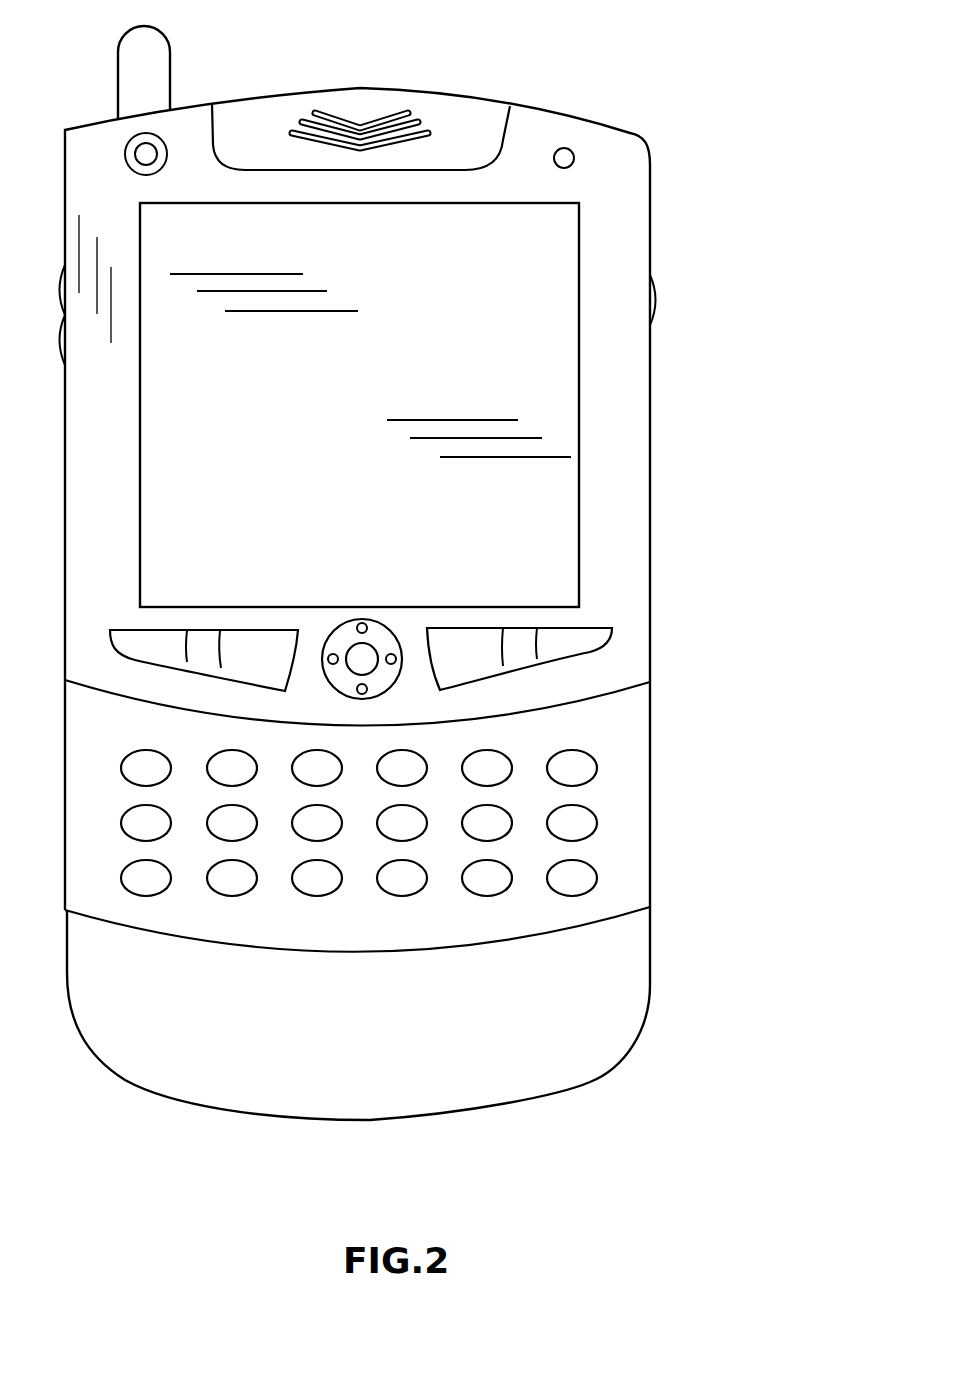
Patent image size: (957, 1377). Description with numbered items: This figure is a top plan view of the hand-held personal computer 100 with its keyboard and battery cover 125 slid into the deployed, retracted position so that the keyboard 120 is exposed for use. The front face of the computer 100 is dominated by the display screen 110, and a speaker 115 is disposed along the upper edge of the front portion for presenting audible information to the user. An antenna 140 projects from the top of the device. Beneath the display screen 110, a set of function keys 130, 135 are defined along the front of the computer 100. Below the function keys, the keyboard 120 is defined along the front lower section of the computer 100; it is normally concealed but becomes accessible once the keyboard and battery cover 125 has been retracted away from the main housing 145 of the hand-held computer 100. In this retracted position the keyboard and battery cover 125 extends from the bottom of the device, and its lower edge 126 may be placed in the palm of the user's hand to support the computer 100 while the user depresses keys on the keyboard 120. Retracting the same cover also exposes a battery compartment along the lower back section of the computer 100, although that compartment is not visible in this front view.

The hand-held personal computer 100 is at (605, 177).
The display screen 110 is at (543, 302).
The speaker 115 is at (367, 98).
The keyboard 120 is at (613, 882).
The keyboard and battery cover 125 is at (588, 1032).
The lower edge 126 is at (478, 1112).
The function key 130 is at (387, 650).
The function key 135 is at (582, 645).
The antenna 140 is at (147, 27).
The main housing 145 is at (622, 663).